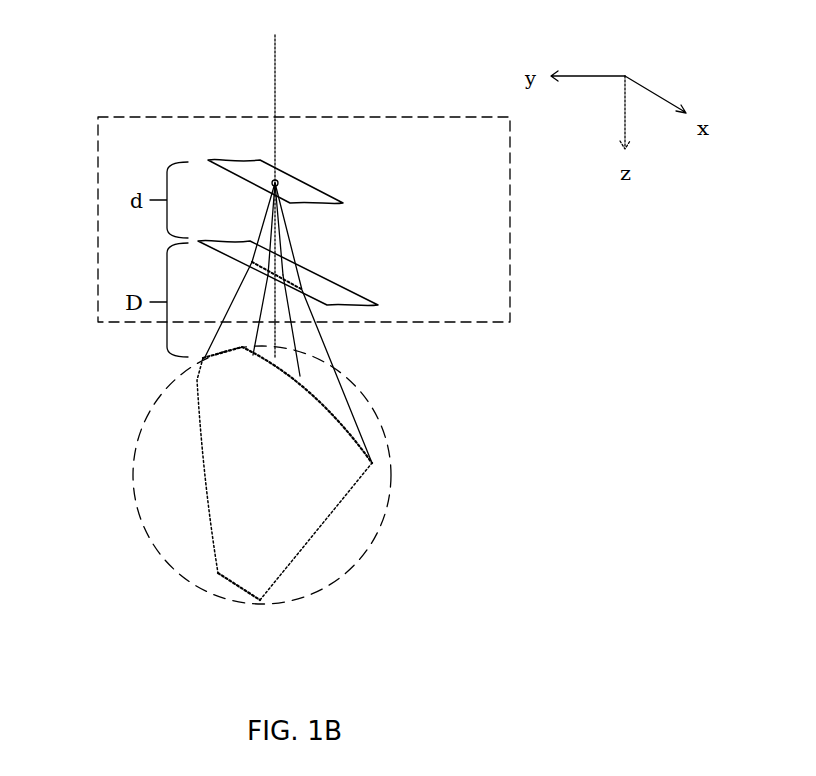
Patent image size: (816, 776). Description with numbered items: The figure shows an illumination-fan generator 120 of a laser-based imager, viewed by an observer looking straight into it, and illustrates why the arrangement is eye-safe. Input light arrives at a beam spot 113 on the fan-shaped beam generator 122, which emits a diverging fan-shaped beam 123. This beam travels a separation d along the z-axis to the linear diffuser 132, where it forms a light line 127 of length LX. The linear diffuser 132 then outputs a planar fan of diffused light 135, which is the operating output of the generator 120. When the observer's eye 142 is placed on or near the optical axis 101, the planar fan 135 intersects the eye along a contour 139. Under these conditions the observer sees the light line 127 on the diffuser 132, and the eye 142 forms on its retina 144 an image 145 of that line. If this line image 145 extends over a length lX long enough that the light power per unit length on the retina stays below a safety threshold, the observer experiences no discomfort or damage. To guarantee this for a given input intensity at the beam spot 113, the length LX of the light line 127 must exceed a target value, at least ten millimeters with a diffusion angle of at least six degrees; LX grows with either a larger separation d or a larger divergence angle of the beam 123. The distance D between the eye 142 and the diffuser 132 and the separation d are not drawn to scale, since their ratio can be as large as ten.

The optical axis 101 is at (275, 52).
The beam spot 113 is at (275, 183).
The illumination-fan generator 120 is at (146, 149).
The fan-shaped beam generator 122 is at (323, 190).
The fan-shaped beam 123 is at (260, 221).
The light line 127 is at (287, 272).
The linear diffuser 132 is at (368, 306).
The planar fan of diffused light 135 is at (230, 294).
The contour 139 is at (333, 411).
The observer's eye 142 is at (112, 444).
The retina 144 is at (203, 553).
The image of the light line 145 is at (236, 588).